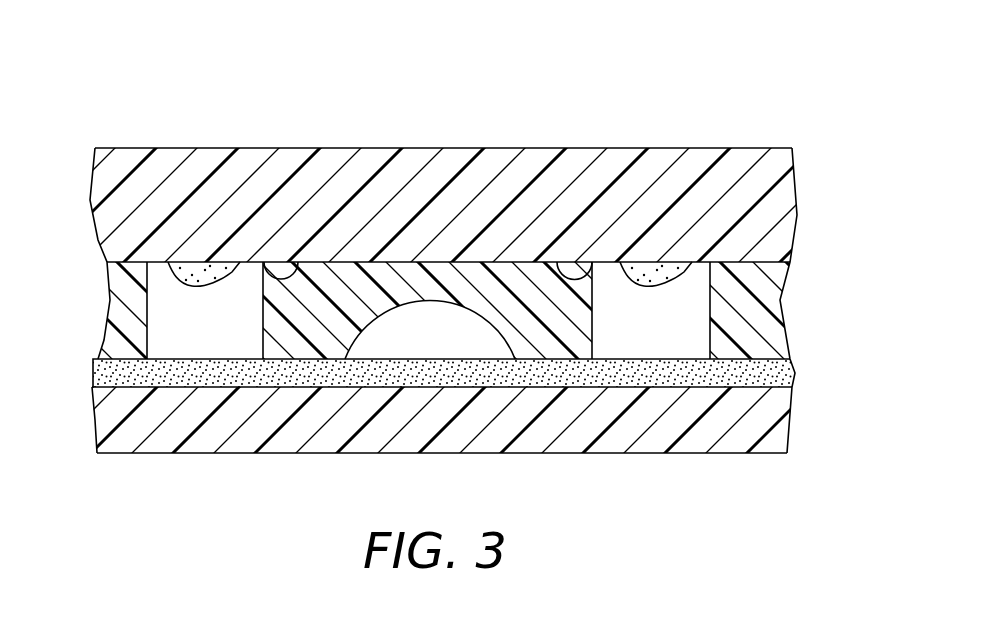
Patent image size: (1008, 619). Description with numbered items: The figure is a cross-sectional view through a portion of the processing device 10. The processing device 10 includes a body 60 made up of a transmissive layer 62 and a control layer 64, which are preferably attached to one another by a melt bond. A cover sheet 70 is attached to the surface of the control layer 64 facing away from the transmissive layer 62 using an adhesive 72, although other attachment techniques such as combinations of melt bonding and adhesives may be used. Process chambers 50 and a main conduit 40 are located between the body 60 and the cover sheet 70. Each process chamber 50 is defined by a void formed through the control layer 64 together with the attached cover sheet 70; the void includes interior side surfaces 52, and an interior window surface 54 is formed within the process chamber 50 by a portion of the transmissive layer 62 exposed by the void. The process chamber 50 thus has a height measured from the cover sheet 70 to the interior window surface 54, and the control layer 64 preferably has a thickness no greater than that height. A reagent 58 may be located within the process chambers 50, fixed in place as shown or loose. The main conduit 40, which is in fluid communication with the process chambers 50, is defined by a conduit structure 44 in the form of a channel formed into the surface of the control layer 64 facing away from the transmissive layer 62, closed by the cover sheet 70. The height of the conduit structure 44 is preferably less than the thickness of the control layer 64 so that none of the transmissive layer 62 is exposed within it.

The processing device 10 is at (781, 88).
The main conduit 40 is at (416, 349).
The conduit structure 44 is at (377, 317).
The process chambers 50 is at (193, 332).
The interior side surfaces 52 is at (160, 262).
The interior window surface 54 is at (297, 262).
The reagent 58 is at (205, 262).
The body 60 is at (82, 146).
The transmissive layer 62 is at (762, 218).
The control layer 64 is at (765, 283).
The cover sheet 70 is at (765, 420).
The adhesive 72 is at (780, 373).